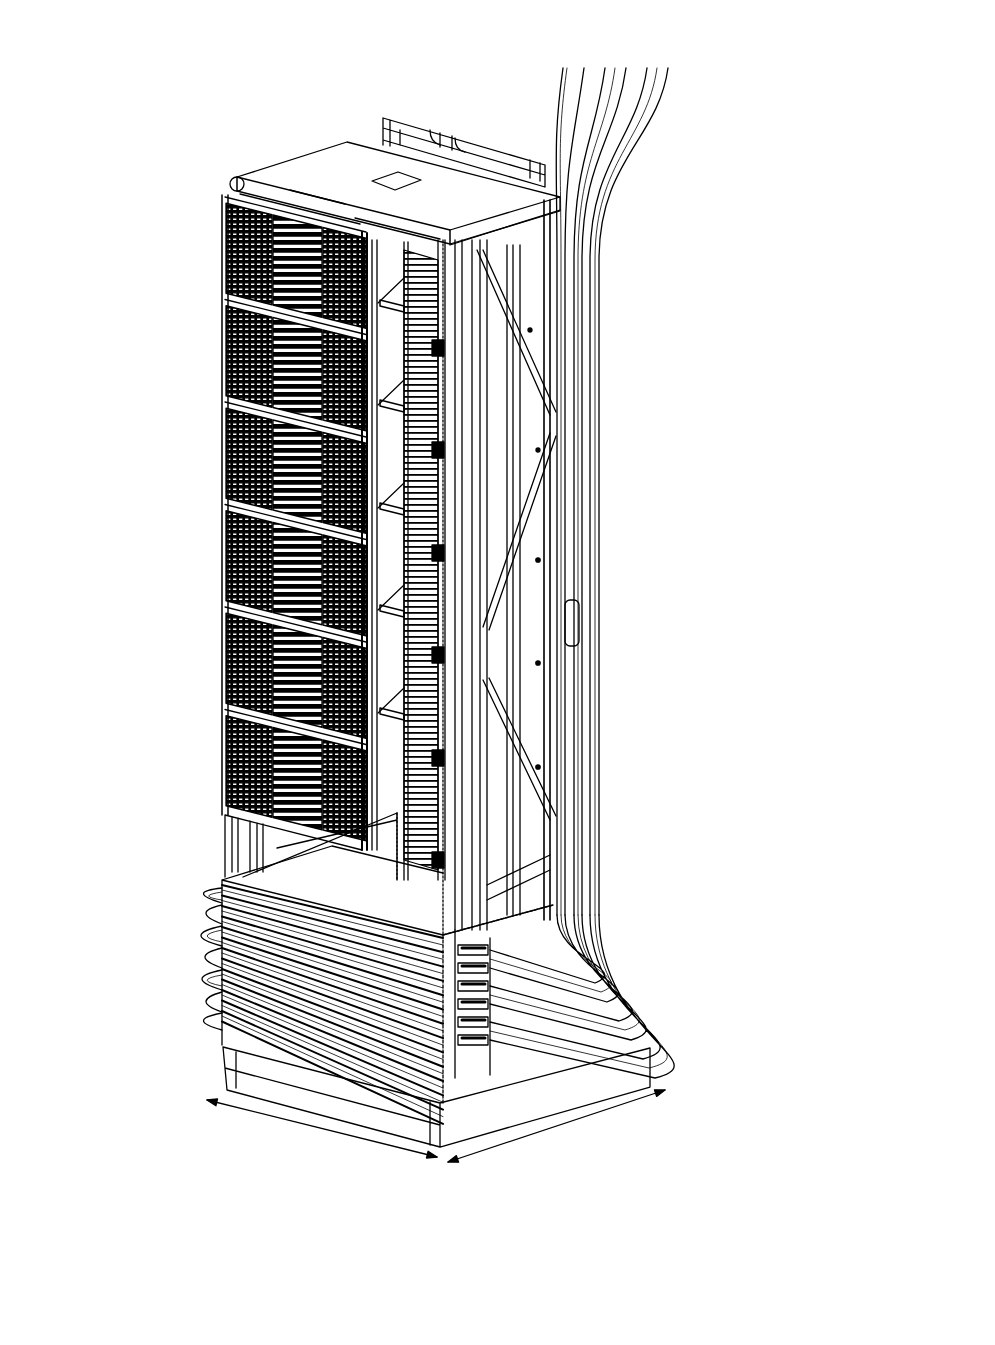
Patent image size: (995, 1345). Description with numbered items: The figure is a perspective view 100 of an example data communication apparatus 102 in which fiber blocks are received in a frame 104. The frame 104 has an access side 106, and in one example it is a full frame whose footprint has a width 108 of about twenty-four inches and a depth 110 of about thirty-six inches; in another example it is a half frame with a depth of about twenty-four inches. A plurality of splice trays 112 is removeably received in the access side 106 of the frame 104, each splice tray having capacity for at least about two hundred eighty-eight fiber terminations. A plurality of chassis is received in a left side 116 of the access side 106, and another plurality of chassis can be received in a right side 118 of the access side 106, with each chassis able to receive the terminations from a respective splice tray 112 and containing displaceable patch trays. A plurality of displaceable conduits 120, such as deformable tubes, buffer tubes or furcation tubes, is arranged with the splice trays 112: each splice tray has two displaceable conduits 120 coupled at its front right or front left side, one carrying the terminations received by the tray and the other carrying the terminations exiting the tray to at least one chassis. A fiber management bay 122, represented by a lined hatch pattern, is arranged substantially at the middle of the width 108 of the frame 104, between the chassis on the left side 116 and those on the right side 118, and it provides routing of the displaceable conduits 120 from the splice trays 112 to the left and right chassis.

The perspective view 100 is at (150, 1172).
The data communication apparatus 102 is at (250, 146).
The frame 104 is at (255, 186).
The access side 106 is at (347, 198).
The width 108 is at (307, 1122).
The depth 110 is at (583, 1118).
The splice trays 112 is at (222, 1028).
The left side 116 is at (350, 207).
The right side 118 is at (352, 205).
The displaceable conduits 120 is at (200, 915).
The fiber management bay 122 is at (412, 848).